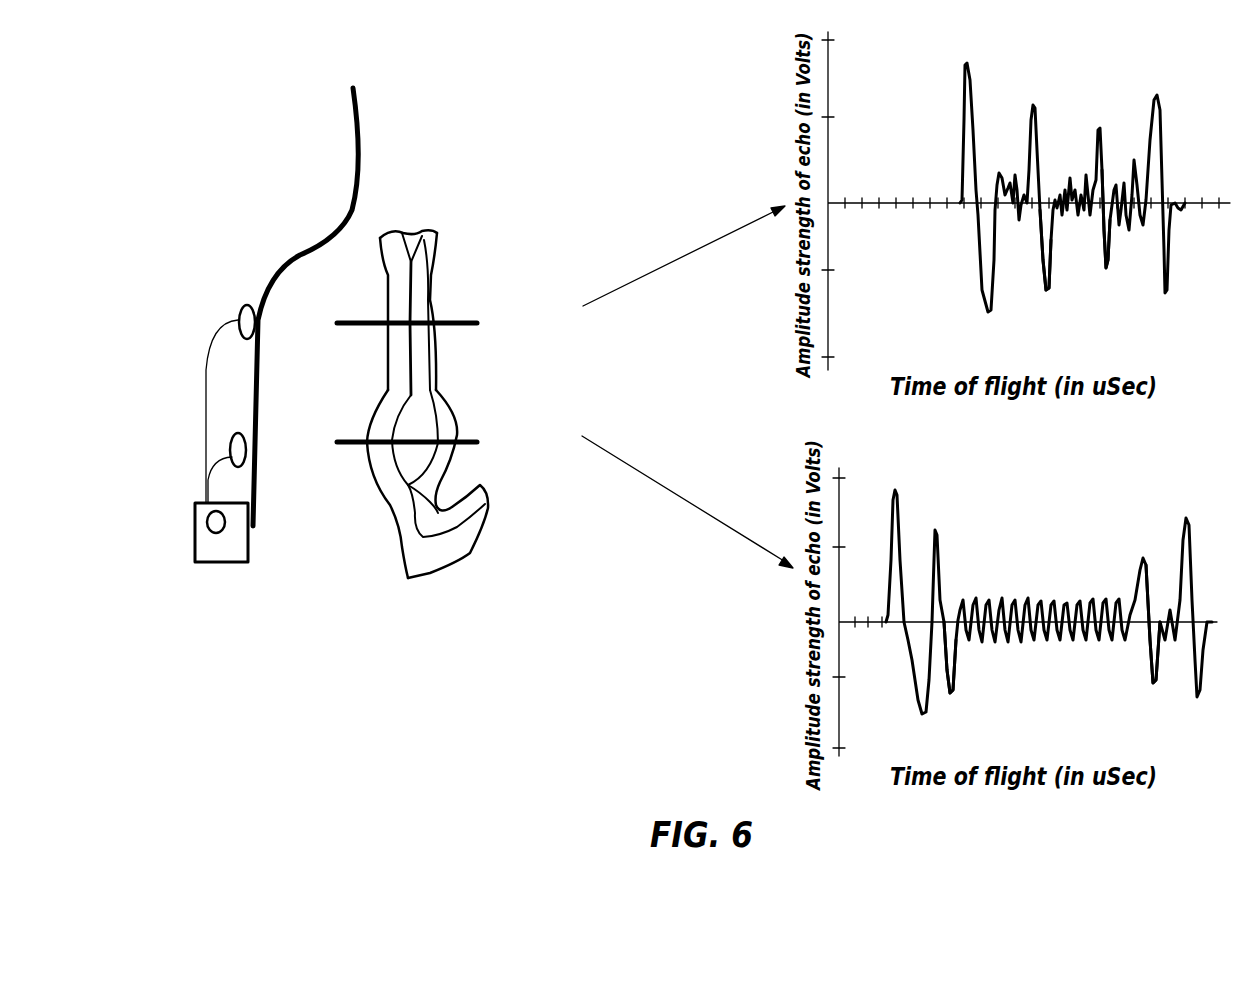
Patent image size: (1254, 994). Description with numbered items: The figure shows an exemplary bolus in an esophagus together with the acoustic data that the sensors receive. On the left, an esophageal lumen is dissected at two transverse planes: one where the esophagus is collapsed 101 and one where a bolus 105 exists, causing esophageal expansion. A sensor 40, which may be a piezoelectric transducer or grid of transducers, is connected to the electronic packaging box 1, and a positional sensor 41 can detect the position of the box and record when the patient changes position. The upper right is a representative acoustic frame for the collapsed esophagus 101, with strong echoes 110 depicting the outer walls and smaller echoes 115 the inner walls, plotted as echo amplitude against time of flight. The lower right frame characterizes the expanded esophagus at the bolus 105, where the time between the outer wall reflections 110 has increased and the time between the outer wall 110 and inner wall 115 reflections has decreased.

The electronic packaging box 1 is at (195, 558).
The sensor 40 is at (230, 445).
The positional sensor 41 is at (195, 523).
The collapsed esophagus 101 is at (430, 304).
The bolus 105 is at (423, 455).
The strong echoes 110 is at (1153, 100).
The smaller echoes 115 is at (1106, 269).